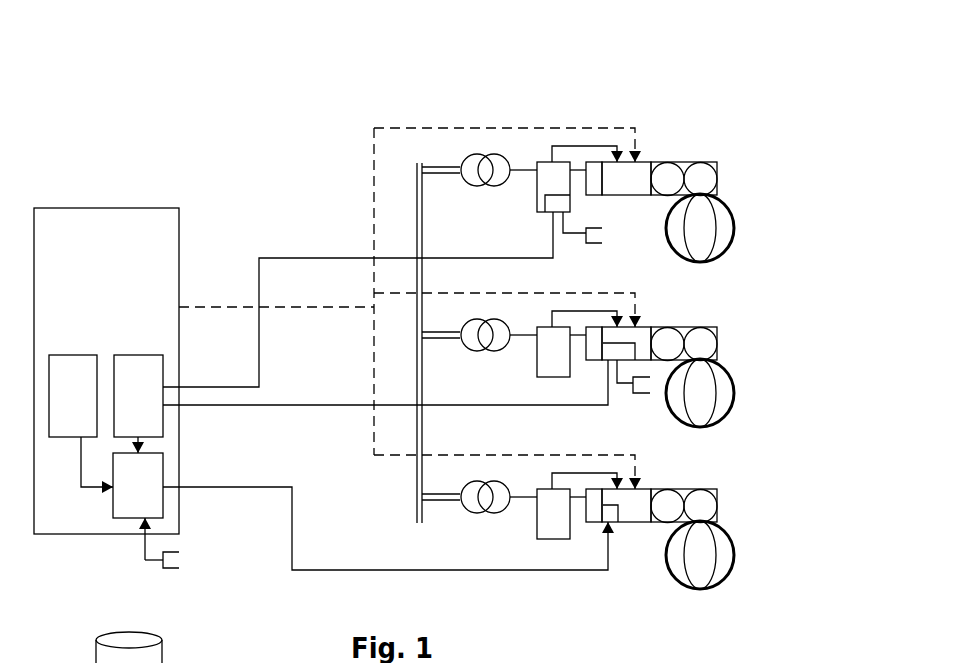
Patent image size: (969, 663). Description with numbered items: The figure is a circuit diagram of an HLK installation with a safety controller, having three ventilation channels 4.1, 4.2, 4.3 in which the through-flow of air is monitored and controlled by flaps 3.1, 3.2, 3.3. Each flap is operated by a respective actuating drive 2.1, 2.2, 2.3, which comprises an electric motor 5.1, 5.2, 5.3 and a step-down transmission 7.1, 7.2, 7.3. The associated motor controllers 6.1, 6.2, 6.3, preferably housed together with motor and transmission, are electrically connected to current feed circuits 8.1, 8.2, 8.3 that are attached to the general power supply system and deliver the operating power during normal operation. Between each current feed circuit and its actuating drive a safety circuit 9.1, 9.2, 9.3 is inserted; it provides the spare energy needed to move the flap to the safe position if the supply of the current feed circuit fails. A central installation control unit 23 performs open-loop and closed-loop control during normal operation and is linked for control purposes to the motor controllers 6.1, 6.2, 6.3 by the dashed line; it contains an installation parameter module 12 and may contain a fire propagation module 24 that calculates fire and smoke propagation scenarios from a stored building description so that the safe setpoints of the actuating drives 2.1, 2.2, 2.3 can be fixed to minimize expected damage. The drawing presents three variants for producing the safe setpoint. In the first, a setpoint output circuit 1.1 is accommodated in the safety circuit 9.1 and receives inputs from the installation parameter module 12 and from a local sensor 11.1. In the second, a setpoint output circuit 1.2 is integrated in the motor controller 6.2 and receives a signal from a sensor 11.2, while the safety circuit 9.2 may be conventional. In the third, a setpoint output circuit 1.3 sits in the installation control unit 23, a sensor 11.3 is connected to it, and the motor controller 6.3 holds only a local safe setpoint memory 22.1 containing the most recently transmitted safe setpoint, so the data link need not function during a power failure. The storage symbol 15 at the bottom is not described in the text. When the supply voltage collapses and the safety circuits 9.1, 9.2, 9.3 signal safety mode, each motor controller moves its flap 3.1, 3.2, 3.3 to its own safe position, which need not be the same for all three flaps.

The installation control unit 23 is at (125, 254).
The fire propagation module 24 is at (61, 402).
The installation parameter module 12 is at (126, 402).
The setpoint output circuit 1.3 is at (126, 500).
The sensor 11.3 is at (202, 566).
The storage tank 15 is at (129, 647).
The current feed circuit 8.1 is at (451, 119).
The current feed circuit 8.2 is at (481, 308).
The current feed circuit 8.3 is at (472, 471).
The safety circuit 9.1 is at (527, 141).
The safety circuit 9.2 is at (519, 365).
The safety circuit 9.3 is at (512, 528).
The motor controller 6.1 is at (617, 133).
The motor controller 6.2 is at (609, 313).
The motor controller 6.3 is at (626, 476).
The electric motor 5.1 is at (671, 133).
The electric motor 5.2 is at (666, 314).
The electric motor 5.3 is at (671, 476).
The step-down transmission 7.1 is at (712, 133).
The step-down transmission 7.2 is at (712, 314).
The step-down transmission 7.3 is at (711, 476).
The actuating drive 2.1 is at (720, 142).
The actuating drive 2.2 is at (720, 322).
The actuating drive 2.3 is at (720, 485).
The flap 3.1 is at (745, 216).
The flap 3.2 is at (737, 393).
The flap 3.3 is at (737, 555).
The ventilation channel 4.1 is at (736, 228).
The ventilation channel 4.2 is at (728, 393).
The ventilation channel 4.3 is at (728, 555).
The setpoint output circuit 1.1 is at (512, 217).
The setpoint output circuit 1.2 is at (593, 373).
The local sensor 11.1 is at (608, 235).
The sensor 11.2 is at (635, 389).
The safe setpoint memory 22.1 is at (569, 536).